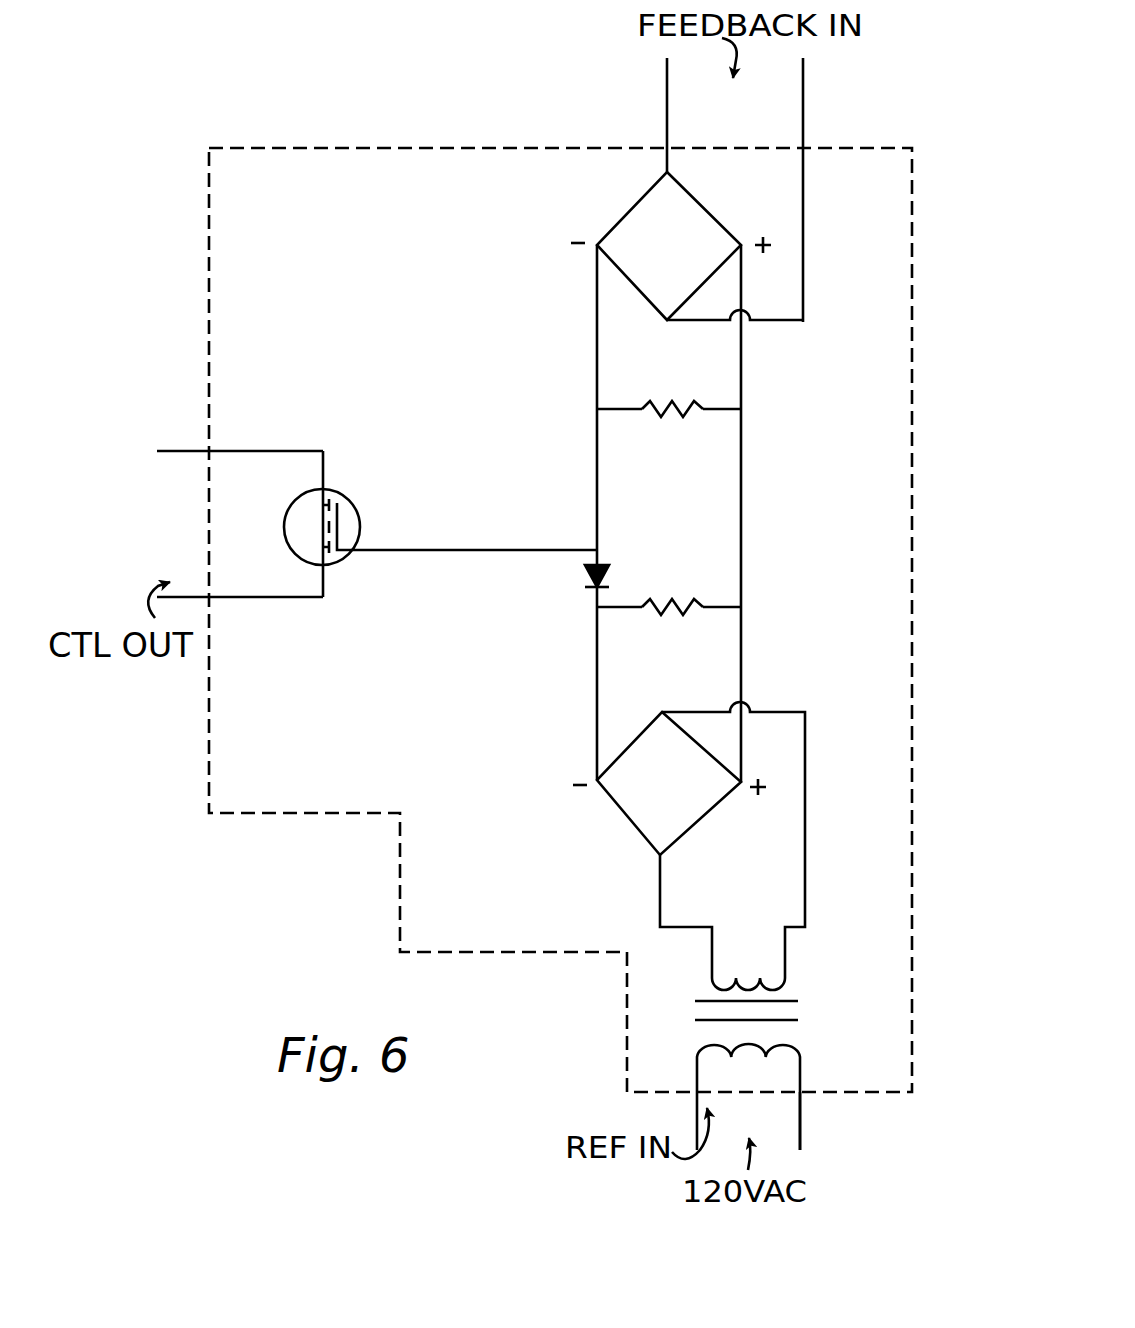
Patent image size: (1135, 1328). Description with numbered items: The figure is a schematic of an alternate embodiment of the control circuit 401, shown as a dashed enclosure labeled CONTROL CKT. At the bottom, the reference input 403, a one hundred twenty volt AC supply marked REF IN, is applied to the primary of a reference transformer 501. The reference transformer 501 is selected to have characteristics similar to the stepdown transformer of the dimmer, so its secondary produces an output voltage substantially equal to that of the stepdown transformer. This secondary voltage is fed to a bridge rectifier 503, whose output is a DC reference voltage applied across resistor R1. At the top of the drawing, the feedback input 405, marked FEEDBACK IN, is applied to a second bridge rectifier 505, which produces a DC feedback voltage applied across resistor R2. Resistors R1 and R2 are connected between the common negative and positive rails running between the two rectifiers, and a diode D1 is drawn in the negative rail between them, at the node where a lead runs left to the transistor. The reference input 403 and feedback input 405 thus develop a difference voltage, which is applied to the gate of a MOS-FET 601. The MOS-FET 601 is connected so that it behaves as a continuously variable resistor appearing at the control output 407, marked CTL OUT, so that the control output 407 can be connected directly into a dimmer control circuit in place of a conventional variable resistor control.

The control circuit 401 is at (520, 131).
The reference input 403 is at (806, 1103).
The feedback input 405 is at (658, 146).
The control output 407 is at (191, 441).
The reference transformer 501 is at (690, 1013).
The bridge rectifier 503 is at (656, 857).
The bridge rectifier 505 is at (604, 244).
The MOS-FET 601 is at (350, 518).
The resistor R1 is at (642, 600).
The resistor R2 is at (643, 400).
The diode D1 is at (585, 586).